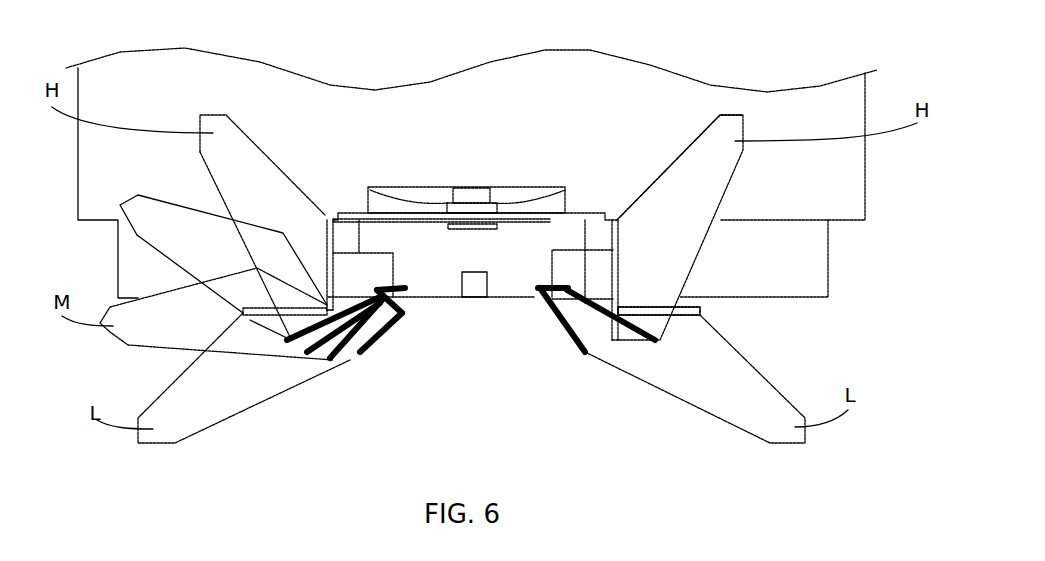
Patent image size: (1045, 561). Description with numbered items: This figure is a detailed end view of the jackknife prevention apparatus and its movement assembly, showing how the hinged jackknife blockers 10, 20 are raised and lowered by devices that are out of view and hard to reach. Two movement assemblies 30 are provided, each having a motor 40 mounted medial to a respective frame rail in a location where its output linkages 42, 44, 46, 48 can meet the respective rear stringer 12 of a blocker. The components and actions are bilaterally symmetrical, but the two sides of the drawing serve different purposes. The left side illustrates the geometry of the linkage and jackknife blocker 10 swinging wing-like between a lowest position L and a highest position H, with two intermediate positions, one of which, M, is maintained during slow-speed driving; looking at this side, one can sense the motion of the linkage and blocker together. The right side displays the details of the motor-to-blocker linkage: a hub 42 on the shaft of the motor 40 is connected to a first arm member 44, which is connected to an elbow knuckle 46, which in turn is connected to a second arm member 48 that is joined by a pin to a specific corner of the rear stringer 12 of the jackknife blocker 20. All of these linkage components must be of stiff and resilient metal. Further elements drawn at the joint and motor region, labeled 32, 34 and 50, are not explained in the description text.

The jackknife blocker 10 is at (272, 130).
The rear stringer 12 is at (732, 135).
The jackknife blocker 20 is at (685, 122).
The movement assembly 30 is at (382, 352).
The first link 32 is at (396, 337).
The second link 34 is at (537, 327).
The motor 40 is at (382, 267).
The hub 42 is at (567, 287).
The first arm member 44 is at (577, 302).
The elbow knuckle 46 is at (585, 312).
The second arm member 48 is at (637, 333).
The motor 50 is at (473, 203).